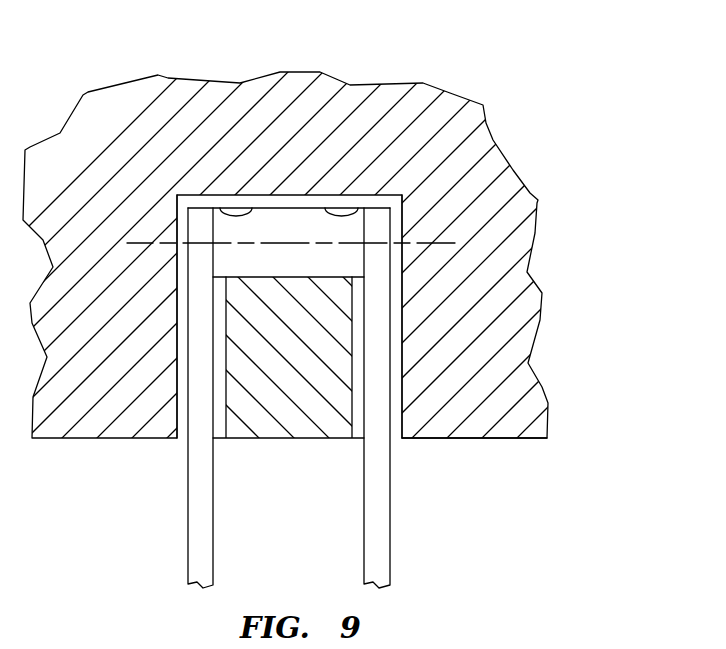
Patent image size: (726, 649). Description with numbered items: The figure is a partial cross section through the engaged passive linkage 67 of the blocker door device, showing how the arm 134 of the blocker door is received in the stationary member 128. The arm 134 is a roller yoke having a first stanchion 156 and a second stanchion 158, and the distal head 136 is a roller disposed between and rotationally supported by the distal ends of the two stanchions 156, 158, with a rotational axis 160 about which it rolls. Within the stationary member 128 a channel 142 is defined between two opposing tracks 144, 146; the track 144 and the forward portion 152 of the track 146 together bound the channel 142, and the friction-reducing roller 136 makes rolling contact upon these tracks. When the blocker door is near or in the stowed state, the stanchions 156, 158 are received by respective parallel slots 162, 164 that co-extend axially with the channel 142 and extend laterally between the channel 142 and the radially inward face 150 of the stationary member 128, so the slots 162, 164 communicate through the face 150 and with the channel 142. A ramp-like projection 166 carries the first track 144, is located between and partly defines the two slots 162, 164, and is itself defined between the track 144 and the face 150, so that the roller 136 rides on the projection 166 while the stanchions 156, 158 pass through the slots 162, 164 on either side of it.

The passive linkage 67 is at (363, 306).
The stationary member 128 is at (470, 102).
The arm 134 is at (279, 398).
The distal head 136 is at (274, 136).
The channel 142 is at (269, 200).
The track 144 is at (322, 278).
The track 146 is at (226, 208).
The face 150 is at (482, 440).
The forward portion 152 is at (357, 213).
The first stanchion 156 is at (202, 550).
The second stanchion 158 is at (383, 540).
The rotational axis 160 is at (435, 241).
The slot 162 is at (178, 440).
The slot 164 is at (395, 440).
The ramp-like projection 166 is at (275, 428).